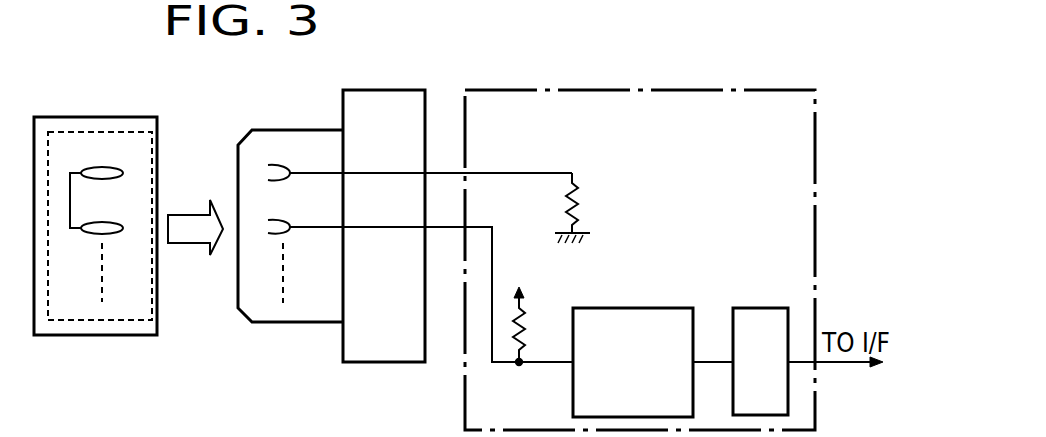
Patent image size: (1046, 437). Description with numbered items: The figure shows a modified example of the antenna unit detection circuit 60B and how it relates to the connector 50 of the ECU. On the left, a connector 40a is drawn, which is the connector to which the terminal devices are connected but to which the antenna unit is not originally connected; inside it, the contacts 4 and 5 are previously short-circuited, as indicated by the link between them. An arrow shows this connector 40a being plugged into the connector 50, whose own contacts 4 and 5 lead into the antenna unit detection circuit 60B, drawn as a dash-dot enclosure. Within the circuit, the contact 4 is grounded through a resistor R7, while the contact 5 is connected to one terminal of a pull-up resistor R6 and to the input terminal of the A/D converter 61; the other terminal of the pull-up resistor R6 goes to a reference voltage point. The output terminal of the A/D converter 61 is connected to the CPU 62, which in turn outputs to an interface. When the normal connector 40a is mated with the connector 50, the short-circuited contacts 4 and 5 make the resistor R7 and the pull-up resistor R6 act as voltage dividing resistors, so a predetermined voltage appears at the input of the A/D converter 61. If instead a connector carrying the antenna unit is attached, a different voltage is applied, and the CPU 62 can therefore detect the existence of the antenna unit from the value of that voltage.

The connector 40a is at (110, 117).
The contact 4 is at (191, 190).
The contact 5 is at (196, 228).
The connector 50 is at (390, 90).
The antenna unit detection circuit 60B is at (633, 90).
The resistor R7 is at (587, 208).
The pull-up resistor R6 is at (539, 326).
The A/D converter 61 is at (650, 308).
The CPU 62 is at (763, 308).